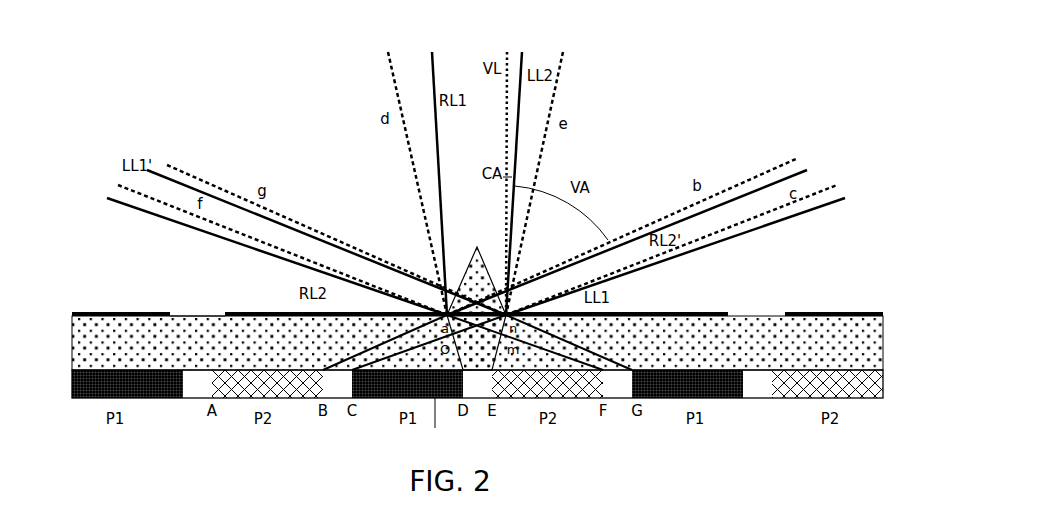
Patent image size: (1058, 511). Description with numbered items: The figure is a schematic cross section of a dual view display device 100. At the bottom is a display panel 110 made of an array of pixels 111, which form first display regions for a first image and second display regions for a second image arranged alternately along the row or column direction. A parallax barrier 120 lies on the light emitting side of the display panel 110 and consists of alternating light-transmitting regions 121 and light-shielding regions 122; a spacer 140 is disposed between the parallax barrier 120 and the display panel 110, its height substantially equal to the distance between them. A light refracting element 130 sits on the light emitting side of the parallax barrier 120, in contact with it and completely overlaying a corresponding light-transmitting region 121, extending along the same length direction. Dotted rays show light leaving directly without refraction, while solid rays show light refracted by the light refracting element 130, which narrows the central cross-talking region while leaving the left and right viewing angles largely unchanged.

The dual view display device 100 is at (78, 111).
The display panel 110 is at (445, 412).
The pixel 111 is at (162, 398).
The parallax barrier 120 is at (445, 291).
The light-transmitting region 121 is at (197, 313).
The light-shielding region 122 is at (122, 312).
The light refracting element 130 is at (470, 262).
The spacer 140 is at (102, 348).